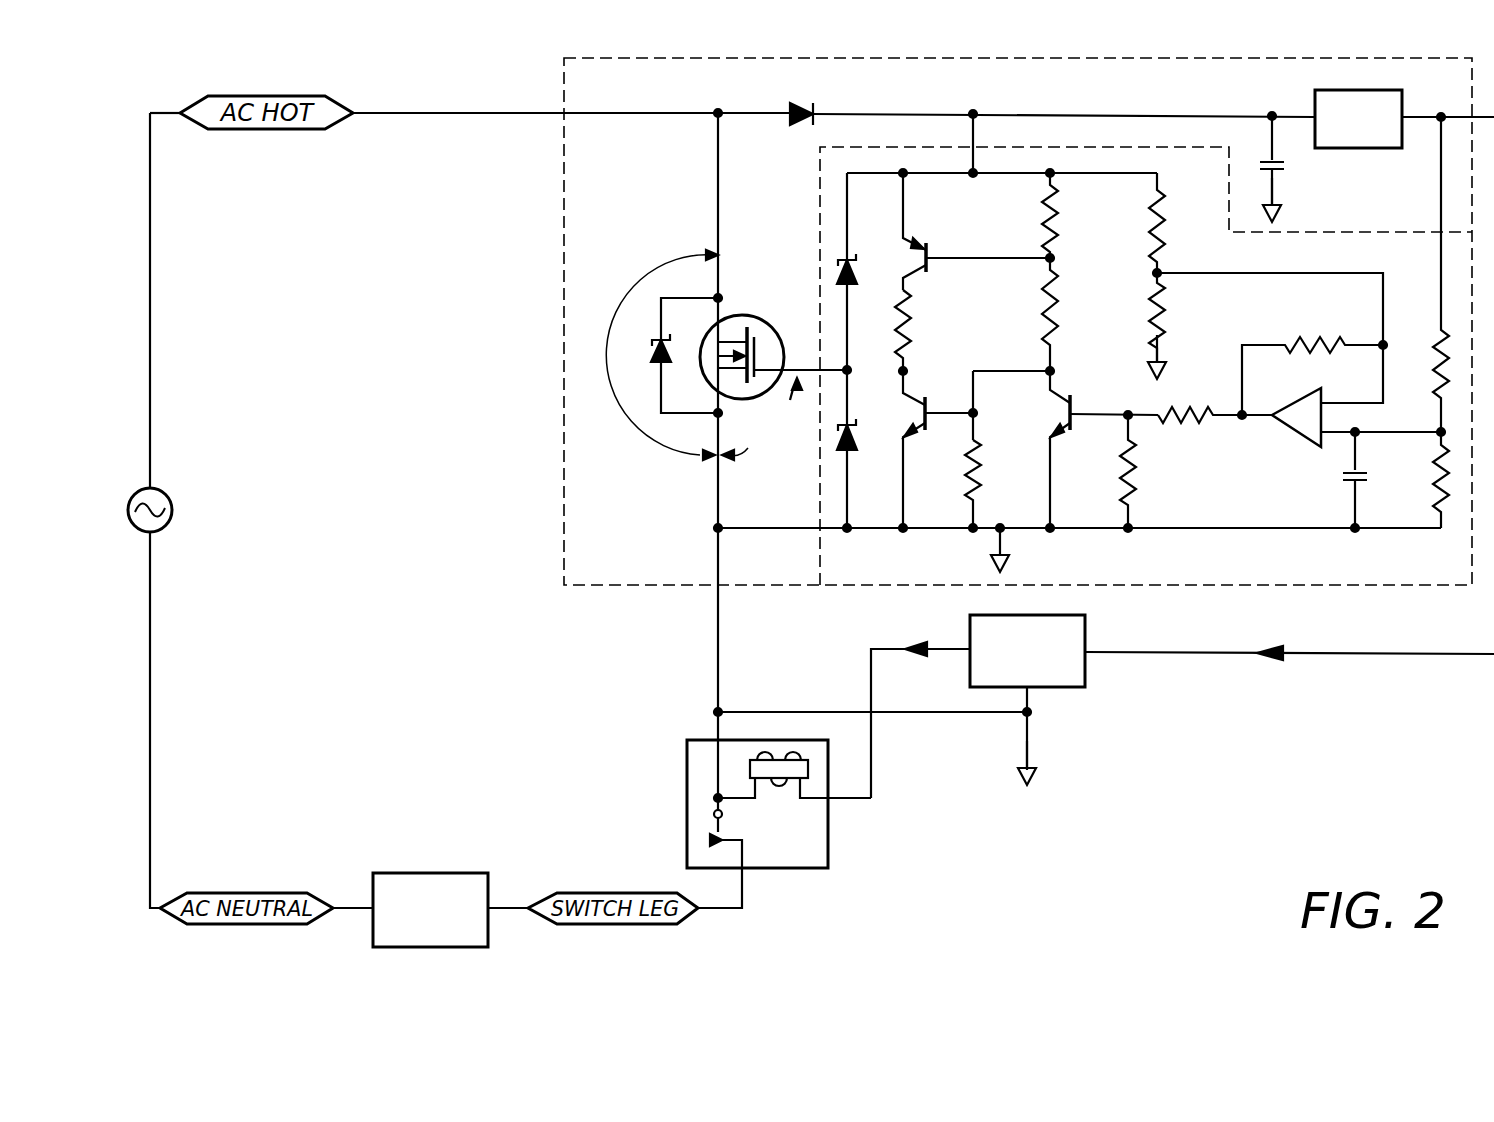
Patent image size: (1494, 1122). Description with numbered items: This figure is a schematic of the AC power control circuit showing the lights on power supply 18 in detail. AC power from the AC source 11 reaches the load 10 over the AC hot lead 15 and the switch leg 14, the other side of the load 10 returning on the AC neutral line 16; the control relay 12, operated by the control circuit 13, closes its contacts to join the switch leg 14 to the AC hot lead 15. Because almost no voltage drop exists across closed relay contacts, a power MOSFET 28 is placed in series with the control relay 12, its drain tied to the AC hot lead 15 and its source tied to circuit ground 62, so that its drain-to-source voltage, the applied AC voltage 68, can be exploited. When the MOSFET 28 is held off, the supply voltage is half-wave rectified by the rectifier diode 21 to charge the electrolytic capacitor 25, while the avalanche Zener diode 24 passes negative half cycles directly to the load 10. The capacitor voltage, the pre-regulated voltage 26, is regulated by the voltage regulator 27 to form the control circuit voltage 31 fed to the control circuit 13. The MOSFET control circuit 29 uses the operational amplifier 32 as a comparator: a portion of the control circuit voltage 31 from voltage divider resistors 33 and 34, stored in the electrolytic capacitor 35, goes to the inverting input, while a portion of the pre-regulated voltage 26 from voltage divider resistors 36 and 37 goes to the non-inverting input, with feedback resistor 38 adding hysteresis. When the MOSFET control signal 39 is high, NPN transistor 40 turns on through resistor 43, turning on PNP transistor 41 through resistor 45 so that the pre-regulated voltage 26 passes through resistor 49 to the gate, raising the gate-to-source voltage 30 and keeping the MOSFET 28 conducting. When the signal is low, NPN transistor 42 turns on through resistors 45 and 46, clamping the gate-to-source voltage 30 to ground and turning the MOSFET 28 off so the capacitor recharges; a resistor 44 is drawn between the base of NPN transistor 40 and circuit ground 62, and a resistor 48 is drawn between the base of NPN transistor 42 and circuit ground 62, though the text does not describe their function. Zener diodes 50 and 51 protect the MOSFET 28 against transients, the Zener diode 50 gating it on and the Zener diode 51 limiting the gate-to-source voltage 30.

The load 10 is at (410, 873).
The AC source 11 is at (170, 520).
The control relay 12 is at (687, 770).
The control circuit 13 is at (1072, 688).
The switch leg 14 is at (742, 895).
The AC hot lead 15 is at (450, 113).
The AC neutral line 16 is at (360, 905).
The lights on power supply 18 is at (652, 196).
The rectifier diode 21 is at (790, 108).
The avalanche Zener diode 24 is at (662, 362).
The electrolytic capacitor 25 is at (1290, 170).
The pre-regulated voltage 26 is at (1272, 116).
The voltage regulator 27 is at (1405, 100).
The MOSFET 28 is at (752, 316).
The MOSFET control circuit 29 is at (815, 500).
The gate-to-source voltage 30 is at (750, 439).
The control circuit voltage 31 is at (1172, 653).
The operational amplifier 32 is at (1290, 408).
The voltage divider resistor 33 is at (1436, 340).
The voltage divider resistor 34 is at (1433, 462).
The electrolytic capacitor 35 is at (1345, 476).
The voltage divider resistor 36 is at (1165, 225).
The voltage divider resistor 37 is at (1166, 320).
The feedback resistor 38 is at (1310, 340).
The MOSFET control signal 39 is at (1255, 418).
The NPN transistor 40 is at (1073, 400).
The PNP transistor 41 is at (930, 250).
The NPN transistor 42 is at (918, 392).
The resistor 43 is at (1174, 425).
The resistor 44 is at (1125, 470).
The resistor 45 is at (1060, 305).
The resistor 46 is at (1060, 225).
The resistor 48 is at (982, 475).
The resistor 49 is at (912, 325).
The Zener diode 50 is at (850, 283).
The Zener diode 51 is at (850, 448).
The circuit ground 62 is at (716, 530).
The applied AC voltage 68 is at (700, 258).